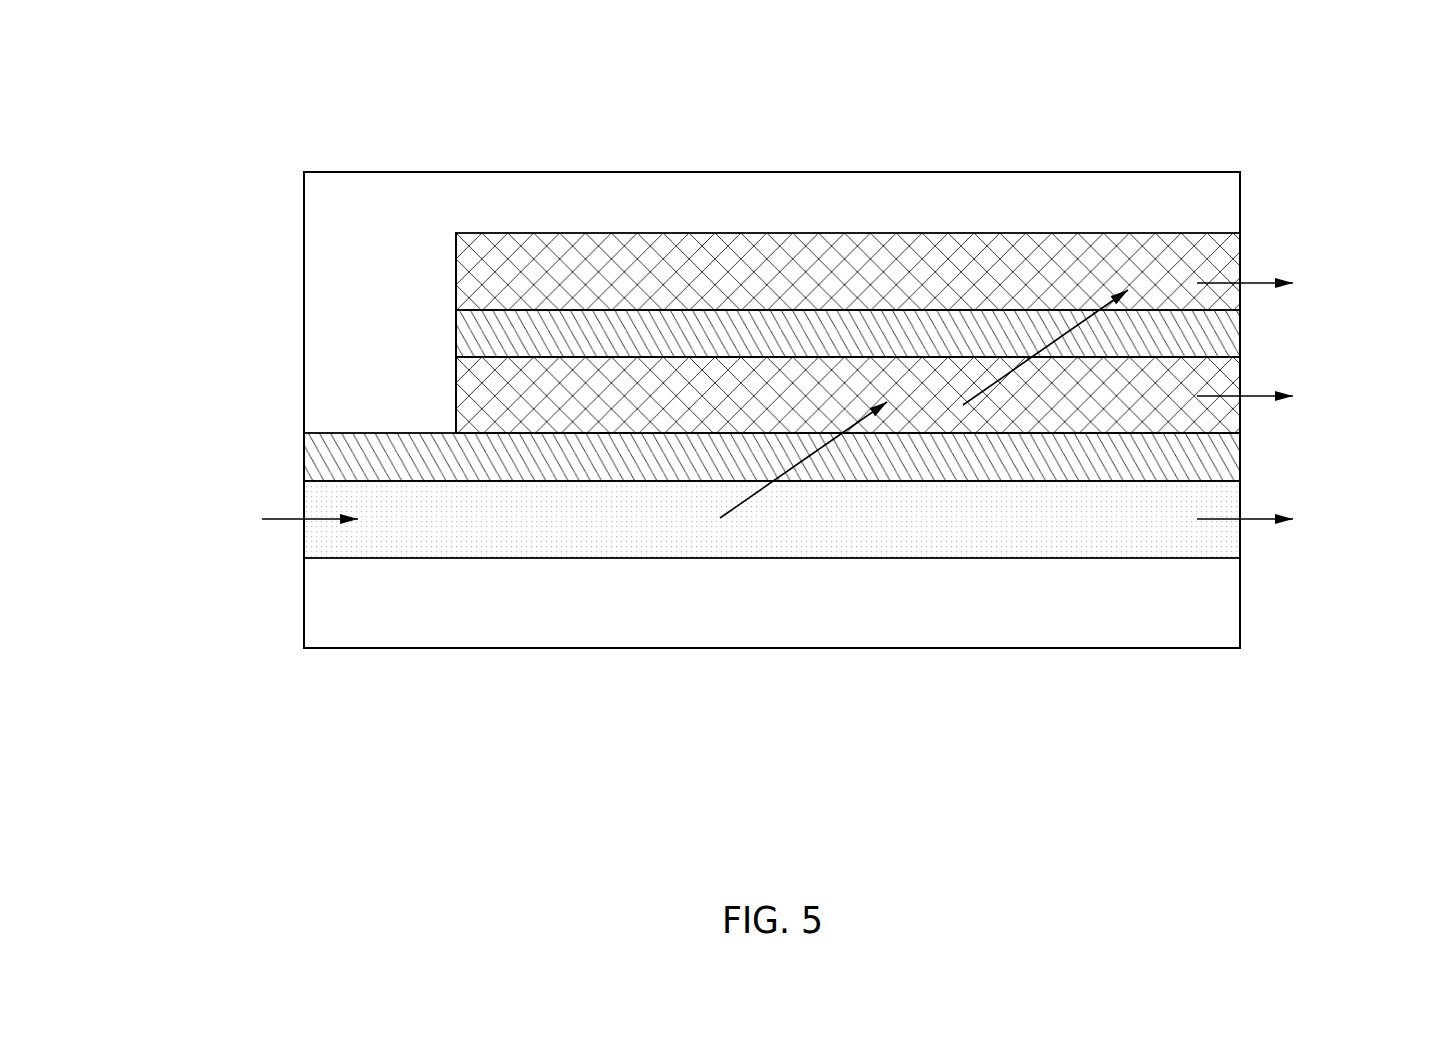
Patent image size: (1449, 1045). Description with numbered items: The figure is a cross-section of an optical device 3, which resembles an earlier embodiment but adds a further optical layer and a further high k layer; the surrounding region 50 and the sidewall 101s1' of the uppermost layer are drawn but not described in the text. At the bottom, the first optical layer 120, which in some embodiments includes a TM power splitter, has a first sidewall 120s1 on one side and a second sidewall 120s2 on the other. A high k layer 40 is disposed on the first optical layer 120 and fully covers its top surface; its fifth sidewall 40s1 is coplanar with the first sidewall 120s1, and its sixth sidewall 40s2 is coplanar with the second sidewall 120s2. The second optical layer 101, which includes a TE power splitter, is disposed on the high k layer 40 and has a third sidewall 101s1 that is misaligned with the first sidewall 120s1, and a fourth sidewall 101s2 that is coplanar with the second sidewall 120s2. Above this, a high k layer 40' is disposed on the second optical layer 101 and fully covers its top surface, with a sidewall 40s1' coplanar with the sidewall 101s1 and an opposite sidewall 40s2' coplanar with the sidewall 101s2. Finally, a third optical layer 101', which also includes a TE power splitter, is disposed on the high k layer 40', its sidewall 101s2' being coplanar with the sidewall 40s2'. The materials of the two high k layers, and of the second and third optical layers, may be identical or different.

The optical device 3 is at (172, 77).
The encapsulation/substrate layer 50 is at (343, 202).
The first optical layer 120 is at (533, 525).
The high k layer 40 is at (772, 288).
The second optical layer 101 is at (848, 264).
The high k layer 40' is at (848, 226).
The third optical layer 101' is at (848, 203).
The first sidewall 120s1 is at (304, 498).
The second sidewall 120s2 is at (1240, 499).
The fifth sidewall 40s1 is at (217, 457).
The sixth sidewall 40s2 is at (1329, 457).
The third sidewall 101s1 is at (285, 395).
The fourth sidewall 101s2 is at (1312, 395).
The sidewall 40s1' is at (287, 333).
The sidewall 40s2' is at (1331, 333).
The first side surface of second optical film 101s1' is at (281, 270).
The sidewall 101s2' is at (1316, 271).